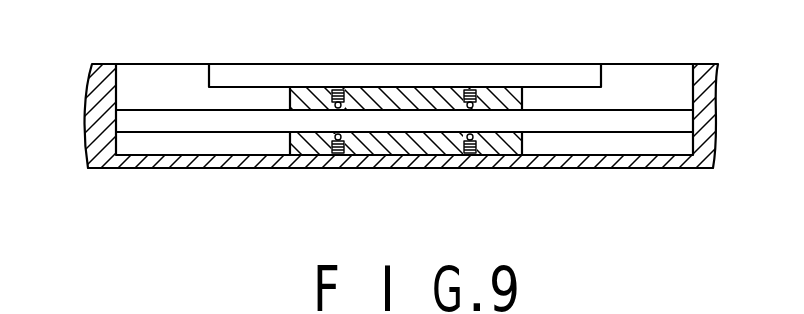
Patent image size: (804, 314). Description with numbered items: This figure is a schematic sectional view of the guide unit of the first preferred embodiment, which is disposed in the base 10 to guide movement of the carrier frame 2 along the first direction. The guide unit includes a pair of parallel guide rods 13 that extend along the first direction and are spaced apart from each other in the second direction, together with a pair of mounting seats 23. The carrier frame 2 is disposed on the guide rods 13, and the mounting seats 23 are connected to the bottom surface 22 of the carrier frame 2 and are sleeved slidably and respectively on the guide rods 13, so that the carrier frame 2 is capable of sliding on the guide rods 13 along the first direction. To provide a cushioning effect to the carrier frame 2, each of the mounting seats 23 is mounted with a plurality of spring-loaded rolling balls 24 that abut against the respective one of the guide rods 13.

The carrier frame 2 is at (222, 75).
The base 10 is at (622, 157).
The guide rods 13 is at (200, 118).
The bottom surface 22 is at (295, 91).
The mounting seats 23 is at (495, 98).
The spring-loaded rolling balls 24 is at (295, 100).